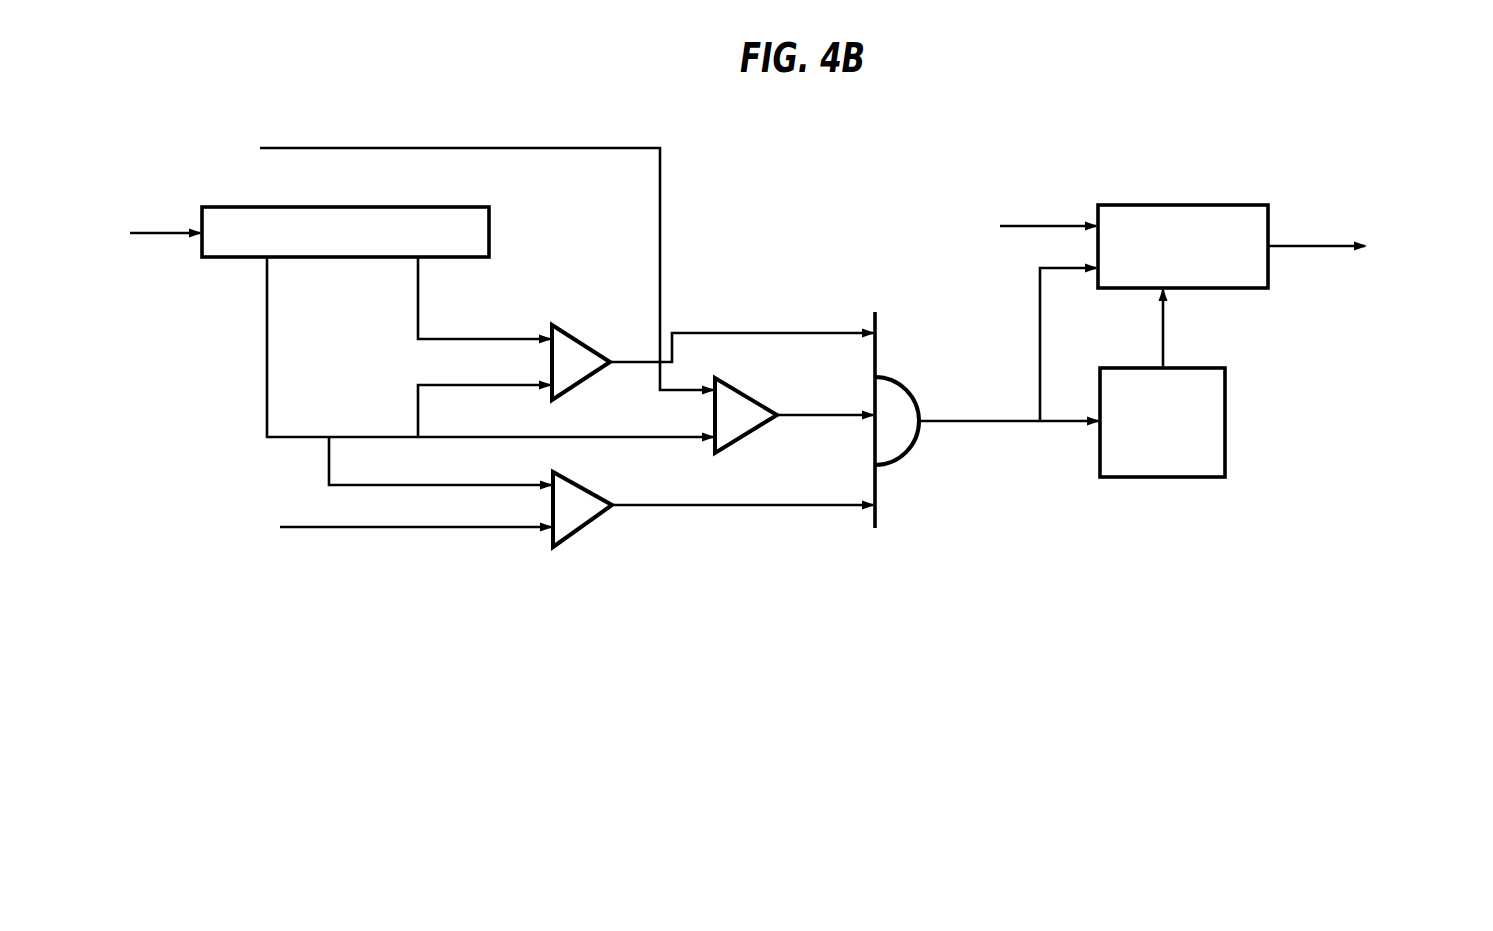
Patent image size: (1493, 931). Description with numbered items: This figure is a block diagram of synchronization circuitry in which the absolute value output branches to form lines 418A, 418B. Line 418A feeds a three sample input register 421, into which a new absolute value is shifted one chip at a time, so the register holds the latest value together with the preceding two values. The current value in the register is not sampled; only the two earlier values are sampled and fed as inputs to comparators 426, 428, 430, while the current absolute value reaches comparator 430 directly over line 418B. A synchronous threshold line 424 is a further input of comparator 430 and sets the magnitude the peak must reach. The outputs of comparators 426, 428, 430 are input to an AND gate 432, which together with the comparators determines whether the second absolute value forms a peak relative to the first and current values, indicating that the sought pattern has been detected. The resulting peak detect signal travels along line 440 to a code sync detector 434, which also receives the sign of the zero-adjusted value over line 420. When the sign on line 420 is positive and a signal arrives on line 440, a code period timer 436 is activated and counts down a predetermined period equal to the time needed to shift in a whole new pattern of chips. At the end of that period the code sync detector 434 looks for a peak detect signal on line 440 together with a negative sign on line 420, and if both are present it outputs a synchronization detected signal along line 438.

The line 418A is at (165, 233).
The line 418B is at (393, 528).
The 3 sample input register 421 is at (405, 207).
The synchronous threshold line 424 is at (485, 148).
The comparator 426 is at (560, 326).
The comparator 428 is at (733, 385).
The comparator 430 is at (570, 478).
The AND gate 432 is at (893, 378).
The line 440 is at (935, 421).
The line 420 is at (1058, 226).
The code sync detector 434 is at (1188, 205).
The code period timer 436 is at (1190, 368).
The line 438 is at (1300, 246).